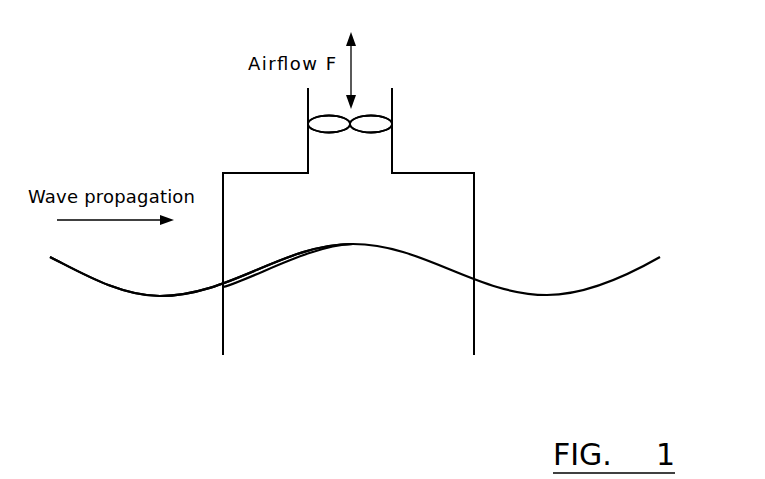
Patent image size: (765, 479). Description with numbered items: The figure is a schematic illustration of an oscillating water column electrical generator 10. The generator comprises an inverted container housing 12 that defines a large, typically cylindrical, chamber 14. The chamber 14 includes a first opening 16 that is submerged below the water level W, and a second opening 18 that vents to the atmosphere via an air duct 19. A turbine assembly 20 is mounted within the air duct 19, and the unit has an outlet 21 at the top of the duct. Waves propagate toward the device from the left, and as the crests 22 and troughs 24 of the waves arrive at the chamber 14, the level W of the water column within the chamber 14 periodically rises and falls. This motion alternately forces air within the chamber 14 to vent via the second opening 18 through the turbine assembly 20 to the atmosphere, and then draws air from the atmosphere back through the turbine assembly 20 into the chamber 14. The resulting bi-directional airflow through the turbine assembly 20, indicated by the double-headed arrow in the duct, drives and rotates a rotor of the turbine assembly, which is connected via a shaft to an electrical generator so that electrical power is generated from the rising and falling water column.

The oscillating water column electrical generator 10 is at (503, 179).
The inverted container housing 12 is at (476, 223).
The chamber 14 is at (447, 230).
The first opening 16 is at (403, 351).
The second opening 18 is at (360, 217).
The air duct 19 is at (362, 164).
The turbine assembly 20 is at (408, 110).
The outlet 21 is at (378, 78).
The crests 22 is at (352, 248).
The troughs 24 is at (168, 298).
The water level W is at (278, 258).